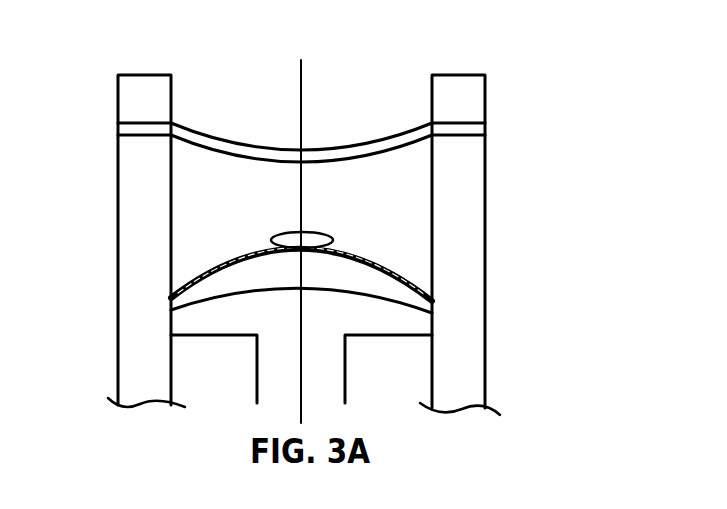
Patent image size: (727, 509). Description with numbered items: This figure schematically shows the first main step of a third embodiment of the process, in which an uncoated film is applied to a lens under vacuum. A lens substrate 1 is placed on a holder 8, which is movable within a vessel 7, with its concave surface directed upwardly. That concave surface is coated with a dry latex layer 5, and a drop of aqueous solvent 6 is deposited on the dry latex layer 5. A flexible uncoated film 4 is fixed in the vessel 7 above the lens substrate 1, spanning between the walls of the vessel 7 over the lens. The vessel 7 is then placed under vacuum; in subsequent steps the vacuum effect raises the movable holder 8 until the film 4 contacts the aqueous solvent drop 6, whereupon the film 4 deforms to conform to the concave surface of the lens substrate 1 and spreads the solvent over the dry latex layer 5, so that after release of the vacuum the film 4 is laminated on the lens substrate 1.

The lens substrate 1 is at (395, 295).
The flexible uncoated film 4 is at (374, 143).
The dry latex layer 5 is at (403, 267).
The aqueous solvent drop 6 is at (272, 238).
The vessel 7 is at (140, 177).
The holder 8 is at (222, 318).